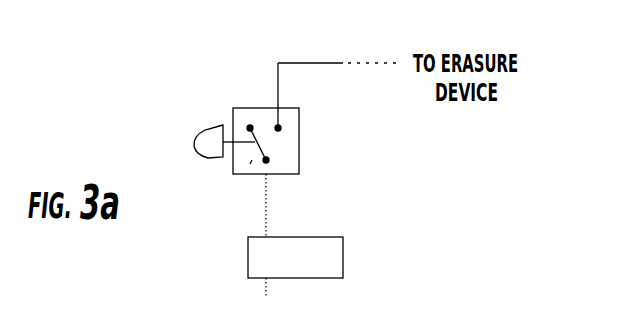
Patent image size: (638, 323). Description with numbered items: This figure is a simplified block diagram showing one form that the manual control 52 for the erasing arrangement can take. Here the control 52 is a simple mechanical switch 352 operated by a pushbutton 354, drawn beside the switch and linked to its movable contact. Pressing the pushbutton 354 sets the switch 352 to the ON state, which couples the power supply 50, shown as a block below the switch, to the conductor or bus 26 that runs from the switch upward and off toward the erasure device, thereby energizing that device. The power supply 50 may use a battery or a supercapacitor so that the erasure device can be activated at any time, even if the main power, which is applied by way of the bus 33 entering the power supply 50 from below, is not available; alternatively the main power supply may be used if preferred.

The conductor or bus 26 is at (327, 61).
The control 52 is at (299, 165).
The pushbutton 354 is at (200, 127).
The mechanical switch 352 is at (252, 160).
The power supply 50 is at (315, 237).
The bus 33 is at (264, 285).